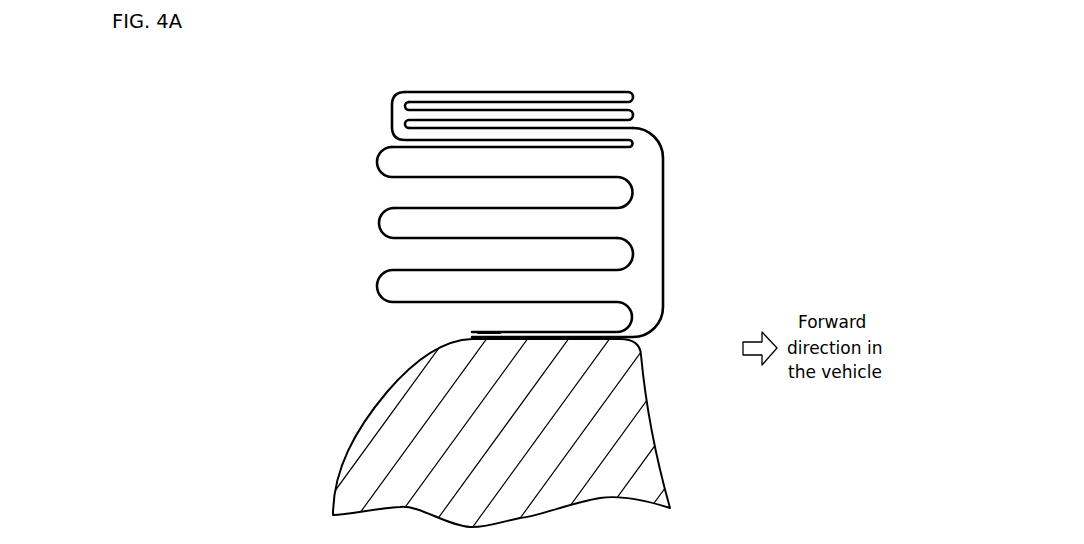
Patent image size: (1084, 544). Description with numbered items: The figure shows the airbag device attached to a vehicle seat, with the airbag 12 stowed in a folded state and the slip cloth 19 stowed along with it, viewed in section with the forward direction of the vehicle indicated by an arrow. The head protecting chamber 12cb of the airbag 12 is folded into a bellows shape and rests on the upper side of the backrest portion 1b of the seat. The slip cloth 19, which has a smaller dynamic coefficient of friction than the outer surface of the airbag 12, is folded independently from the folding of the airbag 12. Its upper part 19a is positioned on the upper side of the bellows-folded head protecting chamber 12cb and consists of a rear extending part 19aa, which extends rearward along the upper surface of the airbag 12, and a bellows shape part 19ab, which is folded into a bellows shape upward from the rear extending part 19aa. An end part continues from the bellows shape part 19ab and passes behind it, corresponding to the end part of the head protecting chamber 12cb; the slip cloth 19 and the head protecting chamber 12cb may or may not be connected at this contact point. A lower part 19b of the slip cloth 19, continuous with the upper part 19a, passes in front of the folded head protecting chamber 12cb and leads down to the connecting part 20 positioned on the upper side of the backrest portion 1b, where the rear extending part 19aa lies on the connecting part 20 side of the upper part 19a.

The bellows shape part 19ab is at (590, 73).
The upper part 19a is at (633, 106).
The rear extending part 19aa is at (505, 130).
The lower part 19b is at (663, 200).
The slip cloth 19 is at (663, 237).
The airbag 12 is at (377, 228).
The head protecting chamber 12cb is at (452, 235).
The connecting part 20 is at (490, 328).
The backrest portion 1b is at (633, 390).